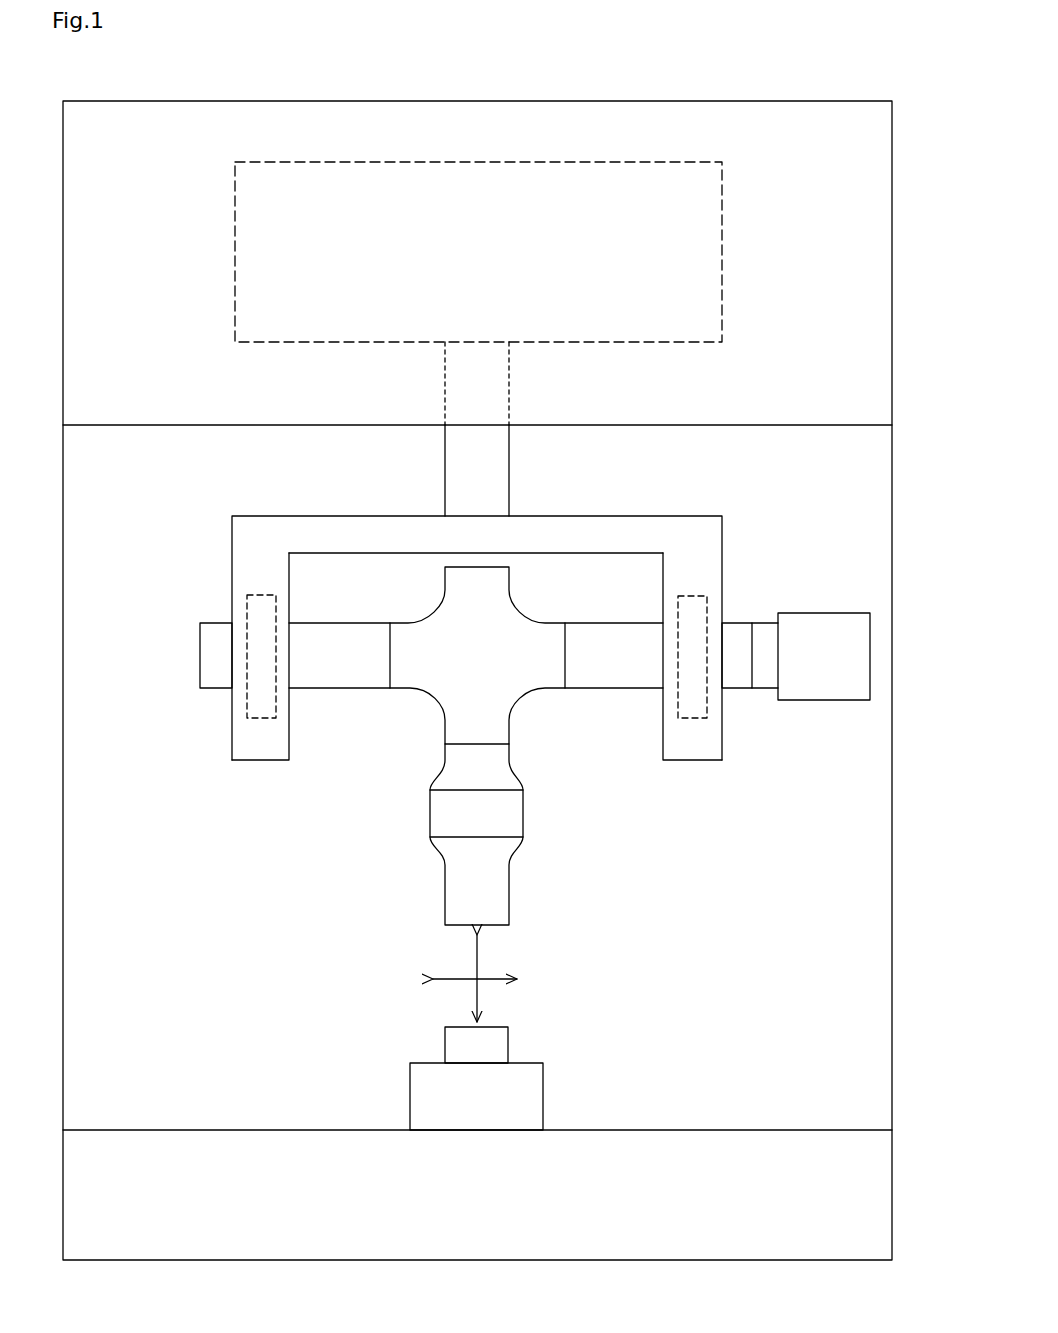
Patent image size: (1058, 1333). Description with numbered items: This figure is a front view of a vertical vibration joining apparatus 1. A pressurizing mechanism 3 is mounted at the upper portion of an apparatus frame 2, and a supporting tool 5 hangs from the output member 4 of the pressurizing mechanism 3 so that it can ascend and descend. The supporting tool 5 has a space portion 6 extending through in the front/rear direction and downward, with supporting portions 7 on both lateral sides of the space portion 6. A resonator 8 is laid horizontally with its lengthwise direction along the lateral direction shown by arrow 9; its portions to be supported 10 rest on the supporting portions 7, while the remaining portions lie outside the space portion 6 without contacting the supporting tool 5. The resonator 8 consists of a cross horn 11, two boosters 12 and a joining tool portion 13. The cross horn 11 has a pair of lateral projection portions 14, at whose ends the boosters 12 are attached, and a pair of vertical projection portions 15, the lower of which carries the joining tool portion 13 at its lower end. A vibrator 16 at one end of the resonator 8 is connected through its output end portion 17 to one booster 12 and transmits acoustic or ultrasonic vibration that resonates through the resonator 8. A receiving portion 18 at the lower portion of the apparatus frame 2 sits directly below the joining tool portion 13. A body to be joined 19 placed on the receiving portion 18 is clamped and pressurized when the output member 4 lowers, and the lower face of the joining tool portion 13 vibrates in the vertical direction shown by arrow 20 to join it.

The vertical vibration joining apparatus 1 is at (768, 101).
The apparatus frame 2 is at (858, 492).
The pressurizing mechanism 3 is at (563, 183).
The output member 4 is at (509, 462).
The supporting tool 5 is at (268, 525).
The space portion 6 is at (300, 568).
The supporting portion 7 is at (238, 747).
The resonator 8 is at (200, 640).
The arrow 9 is at (490, 980).
The portion to be supported 10 is at (265, 716).
The cross horn 11 is at (432, 677).
The booster 12 is at (338, 683).
The joining tool portion 13 is at (520, 823).
The projection portion 14 is at (407, 622).
The projection portion 15 is at (495, 568).
The vibrator 16 is at (817, 625).
The output end portion 17 is at (758, 635).
The receiving portion 18 is at (542, 1097).
The body to be joined 19 is at (508, 1048).
The arrow 20 is at (478, 963).